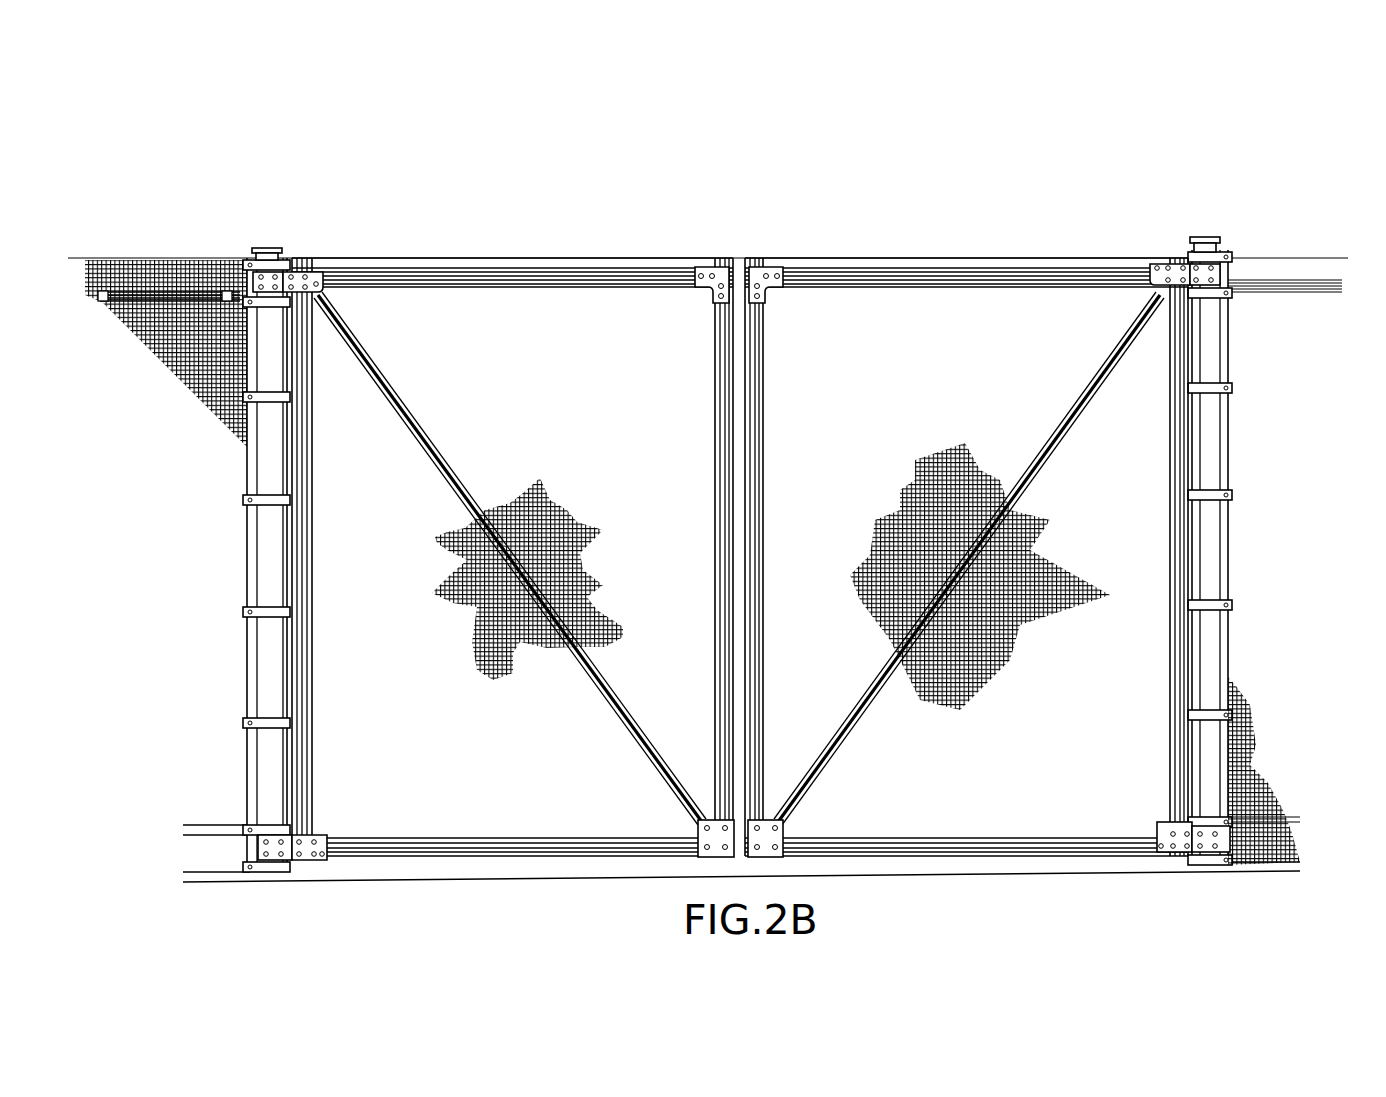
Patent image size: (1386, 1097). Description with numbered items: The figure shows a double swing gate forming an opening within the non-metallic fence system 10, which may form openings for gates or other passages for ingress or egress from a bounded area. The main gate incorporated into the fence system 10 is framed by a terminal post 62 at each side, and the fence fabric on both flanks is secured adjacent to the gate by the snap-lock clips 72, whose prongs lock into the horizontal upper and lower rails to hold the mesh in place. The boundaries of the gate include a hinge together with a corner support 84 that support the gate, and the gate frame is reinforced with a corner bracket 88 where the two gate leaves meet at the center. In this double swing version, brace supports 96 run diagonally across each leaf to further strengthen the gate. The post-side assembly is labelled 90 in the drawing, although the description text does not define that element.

The non-metallic fence system 10 is at (1258, 199).
The terminal post 62 is at (262, 248).
The snap-lock clip 72 is at (105, 292).
The corner support 84 is at (325, 838).
The corner bracket 88 is at (762, 270).
The post 90 is at (243, 548).
The brace supports 96 is at (957, 583).